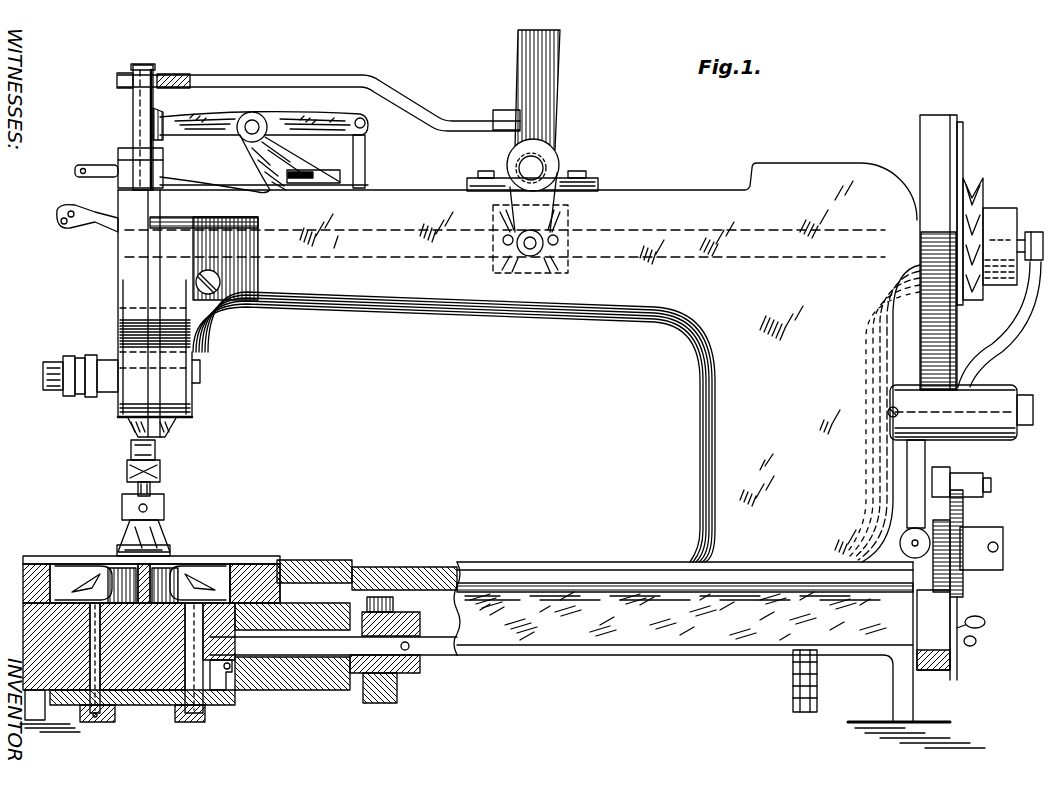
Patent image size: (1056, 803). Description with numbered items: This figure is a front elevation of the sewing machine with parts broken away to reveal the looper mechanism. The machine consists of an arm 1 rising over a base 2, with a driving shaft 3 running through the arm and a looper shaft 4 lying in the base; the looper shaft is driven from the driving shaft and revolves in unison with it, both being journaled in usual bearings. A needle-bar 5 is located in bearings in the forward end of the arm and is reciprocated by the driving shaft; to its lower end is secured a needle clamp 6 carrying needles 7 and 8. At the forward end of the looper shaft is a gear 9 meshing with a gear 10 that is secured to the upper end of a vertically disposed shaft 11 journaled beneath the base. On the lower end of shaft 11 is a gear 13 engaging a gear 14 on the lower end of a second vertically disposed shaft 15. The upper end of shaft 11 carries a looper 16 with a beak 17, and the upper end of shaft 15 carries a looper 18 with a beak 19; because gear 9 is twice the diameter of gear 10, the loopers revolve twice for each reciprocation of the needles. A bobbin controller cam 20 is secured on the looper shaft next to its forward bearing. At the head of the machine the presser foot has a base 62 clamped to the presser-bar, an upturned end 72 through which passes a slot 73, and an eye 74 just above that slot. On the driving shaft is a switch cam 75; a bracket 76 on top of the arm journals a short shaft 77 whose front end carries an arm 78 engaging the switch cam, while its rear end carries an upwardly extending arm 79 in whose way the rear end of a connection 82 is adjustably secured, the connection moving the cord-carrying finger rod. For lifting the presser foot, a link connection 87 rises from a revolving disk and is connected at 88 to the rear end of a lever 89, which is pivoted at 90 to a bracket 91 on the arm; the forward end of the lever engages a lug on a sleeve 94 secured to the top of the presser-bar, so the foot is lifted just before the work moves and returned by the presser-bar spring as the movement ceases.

The arm 1 is at (797, 404).
The base 2 is at (522, 569).
The driving shaft 3 is at (505, 235).
The looper shaft 4 is at (452, 656).
The needle-bar 5 is at (138, 100).
The needle clamp 6 is at (143, 463).
The needle 7 is at (135, 483).
The needle 8 is at (160, 486).
The gear 9 is at (224, 680).
The gear 10 is at (228, 600).
The vertically disposed shaft 11 is at (193, 712).
The gear 13 is at (163, 708).
The gear 14 is at (128, 708).
The vertically disposed shaft 15 is at (96, 722).
The looper 16 is at (190, 583).
The beak 17 is at (200, 573).
The looper 18 is at (94, 583).
The beak 19 is at (100, 574).
The bobbin controller cam 20 is at (382, 670).
The base of presser foot 62 is at (165, 500).
The upturned end 72 is at (155, 524).
The slot 73 is at (170, 549).
The eye 74 is at (137, 509).
The switch cam 75 is at (565, 268).
The bracket 76 is at (598, 183).
The short shaft 77 is at (548, 162).
The arm 78 is at (543, 193).
The upwardly extending arm 79 is at (562, 72).
The connection 82 is at (370, 78).
The link connection 87 is at (365, 176).
The connection point 88 is at (366, 122).
The lever 89 is at (204, 136).
The pivot 90 is at (252, 126).
The bracket 91 is at (263, 154).
The sleeve 94 is at (172, 106).